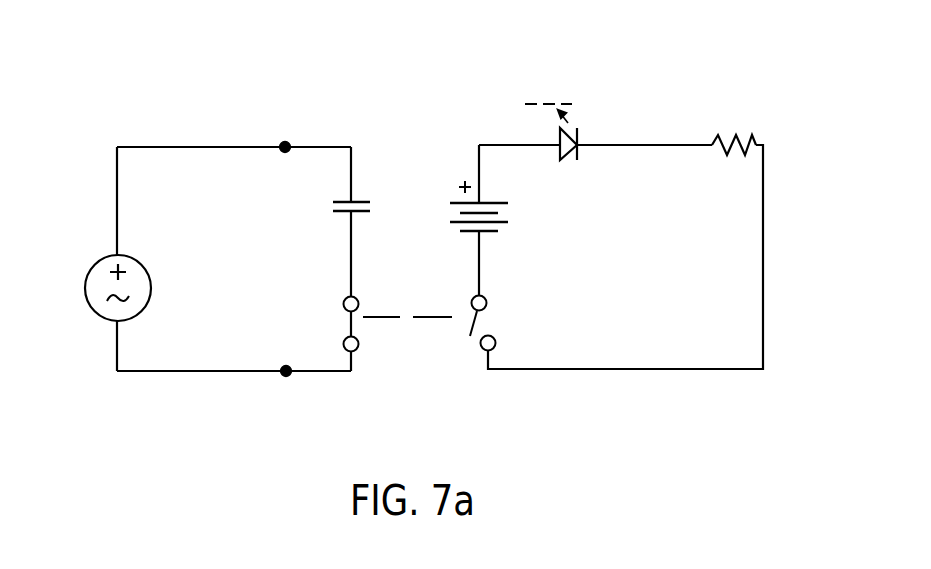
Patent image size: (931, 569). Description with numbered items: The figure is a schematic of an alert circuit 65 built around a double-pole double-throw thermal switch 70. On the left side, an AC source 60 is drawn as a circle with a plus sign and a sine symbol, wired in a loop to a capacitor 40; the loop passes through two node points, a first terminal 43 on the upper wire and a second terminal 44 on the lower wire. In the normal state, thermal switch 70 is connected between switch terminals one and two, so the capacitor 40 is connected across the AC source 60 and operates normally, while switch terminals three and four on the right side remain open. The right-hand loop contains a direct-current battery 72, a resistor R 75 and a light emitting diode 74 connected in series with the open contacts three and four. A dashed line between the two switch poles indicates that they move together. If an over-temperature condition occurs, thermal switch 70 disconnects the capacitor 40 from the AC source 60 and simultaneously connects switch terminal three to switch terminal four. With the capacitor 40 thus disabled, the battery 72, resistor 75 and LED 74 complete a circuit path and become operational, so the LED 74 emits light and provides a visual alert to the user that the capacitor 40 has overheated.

The alert circuit 65 is at (206, 60).
The AC source 60 is at (97, 262).
The first terminal T1 43 is at (284, 142).
The second terminal T2 44 is at (286, 380).
The capacitor 40 is at (333, 207).
The thermal switch 70 is at (412, 289).
The battery 72 is at (500, 220).
The light emitting diode 74 is at (559, 137).
The resistor 75 is at (745, 112).